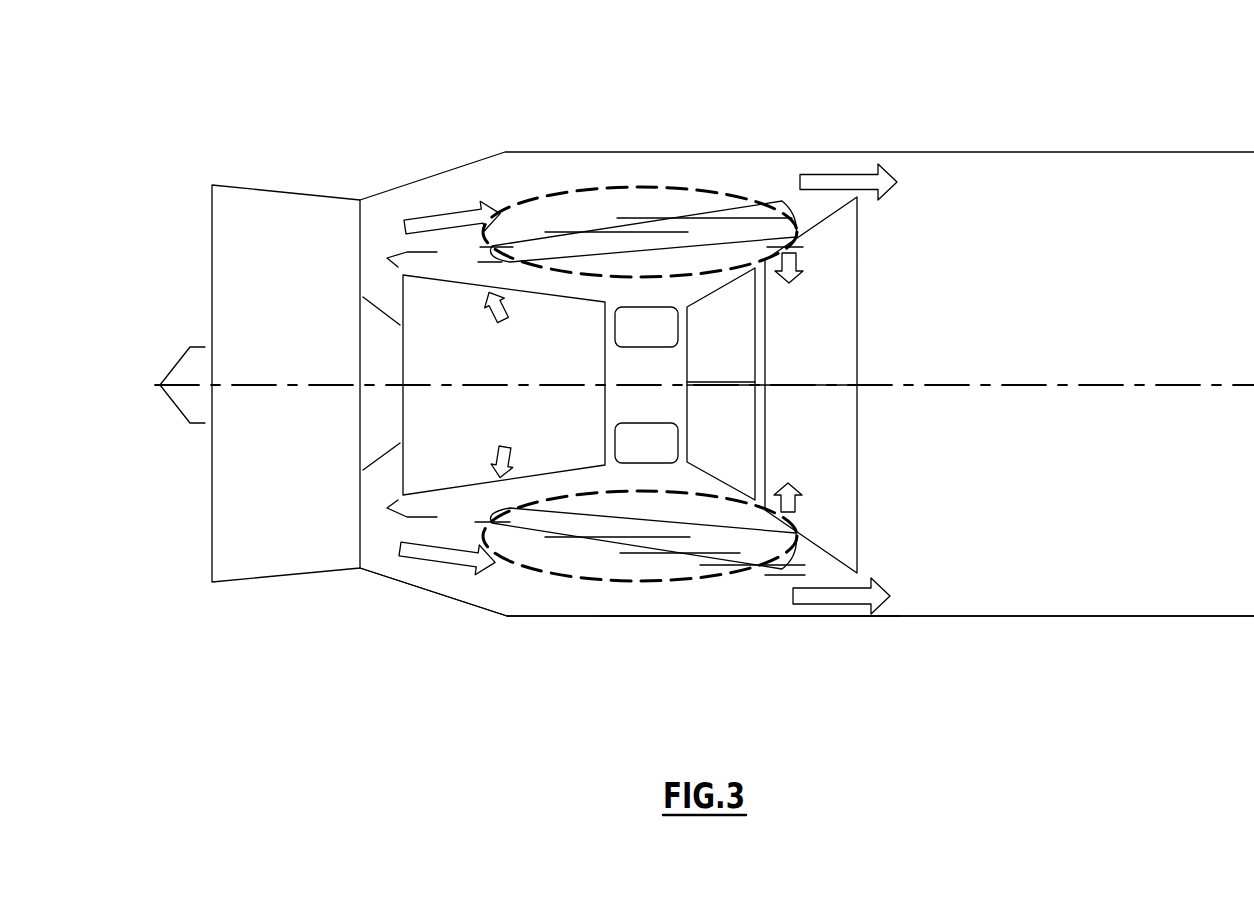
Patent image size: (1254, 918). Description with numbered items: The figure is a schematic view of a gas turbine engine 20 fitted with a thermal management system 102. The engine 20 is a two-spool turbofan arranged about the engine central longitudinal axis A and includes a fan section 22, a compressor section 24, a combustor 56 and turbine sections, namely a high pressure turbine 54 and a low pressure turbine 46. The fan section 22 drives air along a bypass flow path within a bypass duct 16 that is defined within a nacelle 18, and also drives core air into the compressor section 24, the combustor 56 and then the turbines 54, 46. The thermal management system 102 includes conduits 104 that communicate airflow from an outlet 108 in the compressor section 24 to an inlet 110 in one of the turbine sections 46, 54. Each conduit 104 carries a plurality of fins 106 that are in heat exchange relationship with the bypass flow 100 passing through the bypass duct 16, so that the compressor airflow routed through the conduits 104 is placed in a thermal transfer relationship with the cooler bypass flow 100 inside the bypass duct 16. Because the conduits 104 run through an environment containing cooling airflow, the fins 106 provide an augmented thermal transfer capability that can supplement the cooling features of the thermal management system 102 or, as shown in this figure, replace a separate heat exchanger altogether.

The gas turbine engine 20 is at (1030, 75).
The fan section 22 is at (245, 525).
The compressor section 24 is at (433, 463).
The low pressure turbine 46 is at (832, 467).
The high pressure turbine 54 is at (733, 418).
The combustor 56 is at (655, 438).
The bypass flow 100 is at (440, 218).
The thermal management system 102 is at (601, 640).
The conduits 104 is at (648, 225).
The fins 106 is at (704, 204).
The outlet 108 is at (495, 306).
The inlet 110 is at (798, 257).
The bypass duct 16 is at (740, 609).
The nacelle 18 is at (847, 622).
The engine central longitudinal axis A is at (1187, 384).